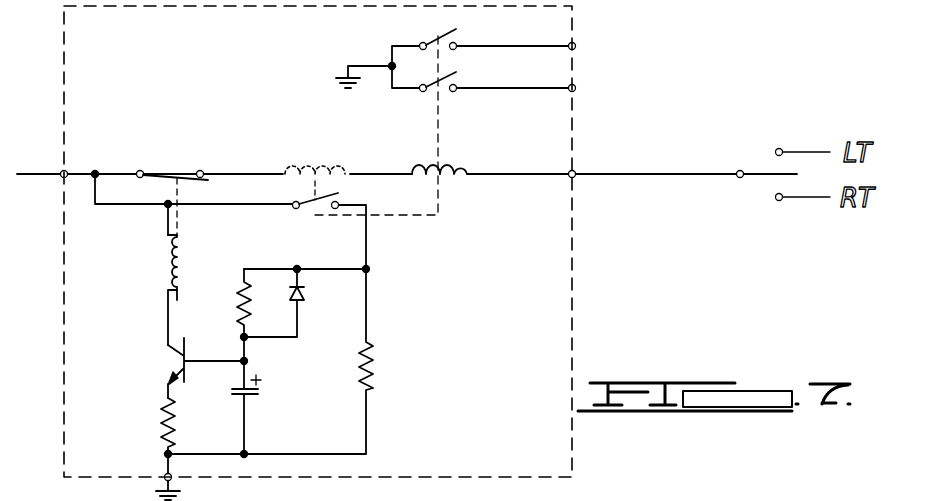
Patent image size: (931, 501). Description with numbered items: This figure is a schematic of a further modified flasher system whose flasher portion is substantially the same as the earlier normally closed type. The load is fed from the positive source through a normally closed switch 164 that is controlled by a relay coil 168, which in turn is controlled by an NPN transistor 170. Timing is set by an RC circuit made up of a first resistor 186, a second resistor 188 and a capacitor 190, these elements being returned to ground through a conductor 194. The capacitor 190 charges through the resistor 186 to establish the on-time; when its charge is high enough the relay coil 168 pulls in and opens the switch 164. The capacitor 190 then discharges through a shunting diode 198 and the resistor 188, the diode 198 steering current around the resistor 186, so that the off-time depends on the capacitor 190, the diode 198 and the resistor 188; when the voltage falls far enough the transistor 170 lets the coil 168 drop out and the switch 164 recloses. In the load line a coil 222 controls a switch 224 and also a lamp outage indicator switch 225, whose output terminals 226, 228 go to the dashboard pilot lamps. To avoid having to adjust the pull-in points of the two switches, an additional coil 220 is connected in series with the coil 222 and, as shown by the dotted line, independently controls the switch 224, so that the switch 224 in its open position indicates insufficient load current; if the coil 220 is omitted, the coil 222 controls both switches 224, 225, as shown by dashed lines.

The normally closed switch 164 is at (176, 171).
The relay coil 168 is at (173, 259).
The NPN transistor 170 is at (177, 356).
The first resistor 186 is at (240, 302).
The second resistor 188 is at (372, 350).
The capacitor 190 is at (259, 391).
The conductor 194 is at (165, 468).
The shunting diode 198 is at (303, 294).
The additional coil 220 is at (293, 168).
The coil 222 is at (453, 178).
The switch 224 is at (306, 210).
The lamp outage indicator switch 225 is at (418, 33).
The output terminal 226 is at (568, 42).
The output terminal 228 is at (570, 92).